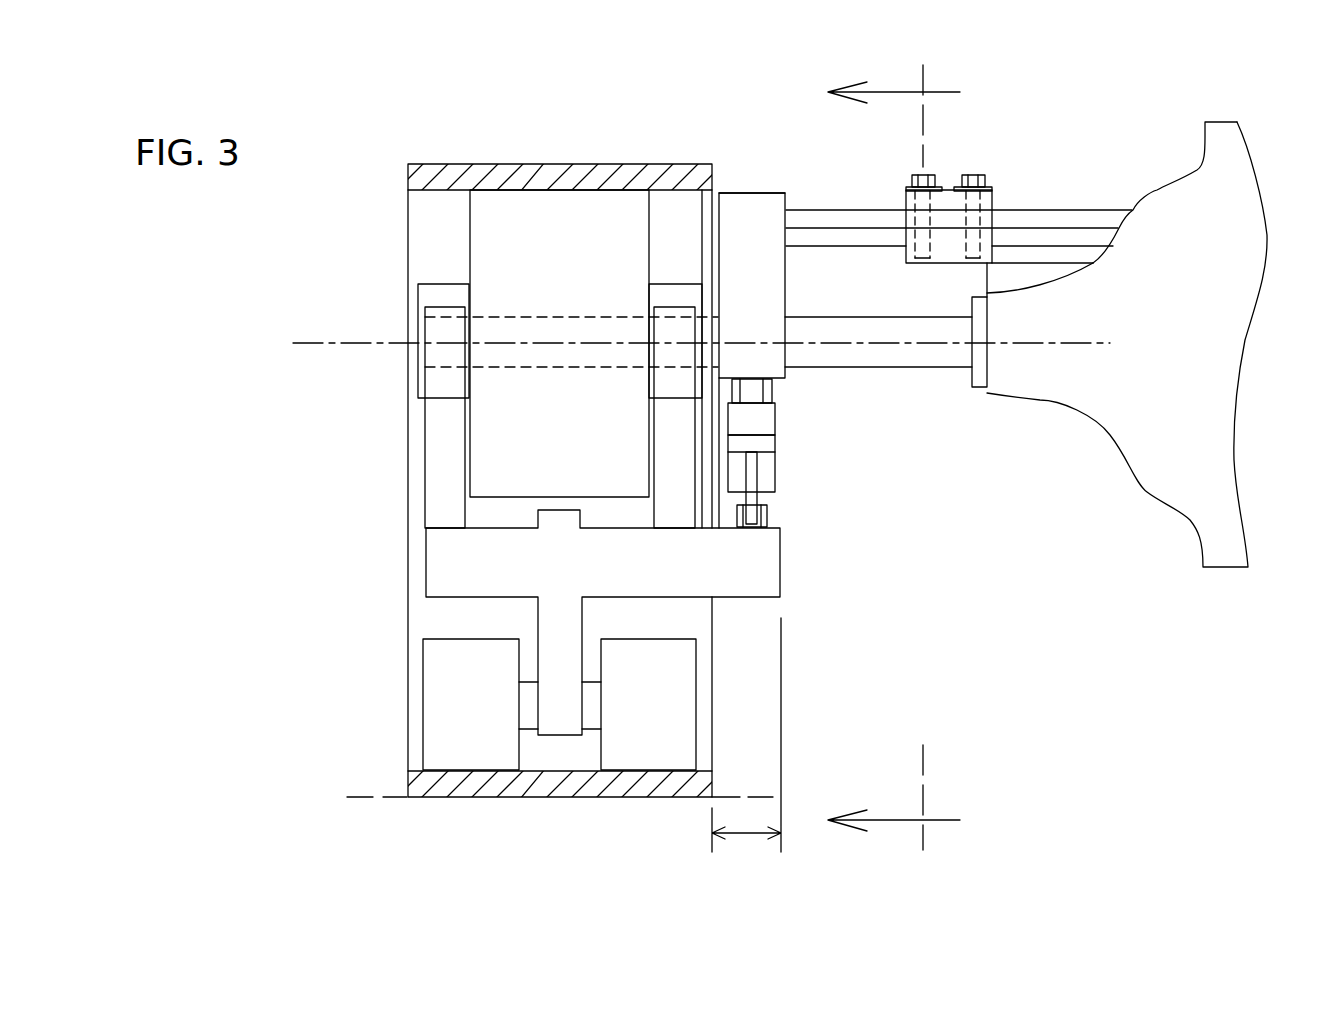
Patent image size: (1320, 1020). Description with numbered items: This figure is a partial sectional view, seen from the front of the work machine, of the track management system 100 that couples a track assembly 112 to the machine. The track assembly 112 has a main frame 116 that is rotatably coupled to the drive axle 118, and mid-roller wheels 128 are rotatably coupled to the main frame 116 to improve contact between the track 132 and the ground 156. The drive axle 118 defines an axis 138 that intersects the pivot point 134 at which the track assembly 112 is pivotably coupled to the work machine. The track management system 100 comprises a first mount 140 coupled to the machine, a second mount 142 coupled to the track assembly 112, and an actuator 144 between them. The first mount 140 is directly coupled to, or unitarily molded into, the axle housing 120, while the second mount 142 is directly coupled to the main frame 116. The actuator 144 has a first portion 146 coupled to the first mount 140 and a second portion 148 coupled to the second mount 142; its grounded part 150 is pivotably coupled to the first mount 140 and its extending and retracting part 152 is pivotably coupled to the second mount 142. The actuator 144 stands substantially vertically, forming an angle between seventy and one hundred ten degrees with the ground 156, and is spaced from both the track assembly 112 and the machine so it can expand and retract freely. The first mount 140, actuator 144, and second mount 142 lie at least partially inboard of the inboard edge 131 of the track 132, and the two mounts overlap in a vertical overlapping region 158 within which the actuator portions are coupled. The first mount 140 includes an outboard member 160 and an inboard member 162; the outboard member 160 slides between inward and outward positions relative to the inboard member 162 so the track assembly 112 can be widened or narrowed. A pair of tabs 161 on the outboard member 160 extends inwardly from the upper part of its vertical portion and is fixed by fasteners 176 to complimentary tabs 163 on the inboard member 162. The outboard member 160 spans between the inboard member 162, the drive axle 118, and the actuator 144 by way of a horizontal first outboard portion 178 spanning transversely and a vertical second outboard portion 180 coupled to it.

The track management system 100 is at (847, 472).
The track assembly 112 is at (307, 795).
The main frame 116 is at (422, 556).
The drive axle 118 is at (953, 368).
The axle housing 120 is at (565, 255).
The mid-roller wheels 128 is at (491, 697).
The inboard edge 131 is at (723, 167).
The track 132 is at (468, 164).
The pivot point 134 is at (652, 297).
The axis 138 is at (312, 343).
The first mount 140 is at (1015, 88).
The second mount 142 is at (798, 538).
The actuator 144 is at (798, 492).
The first portion 146 is at (829, 477).
The second portion 148 is at (829, 411).
The grounded part 150 is at (757, 472).
The extending and retracting part 152 is at (775, 420).
The ground 156 is at (389, 797).
The vertical overlapping region 158 is at (758, 833).
The outboard member 160 is at (762, 172).
The tabs 161 is at (812, 209).
The inboard member 162 is at (1058, 107).
The complimentary tabs 163 is at (1063, 247).
The fasteners 176 is at (930, 176).
The first outboard portion 178 is at (863, 210).
The second outboard portion 180 is at (787, 293).